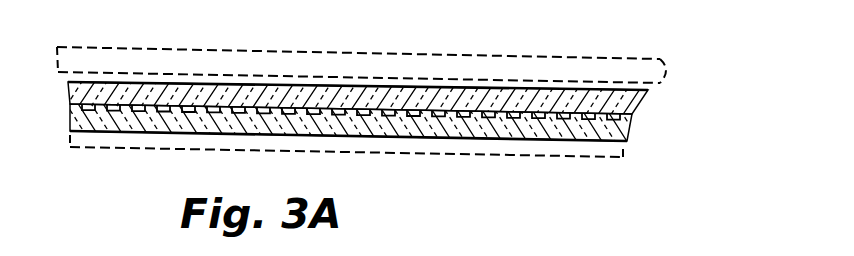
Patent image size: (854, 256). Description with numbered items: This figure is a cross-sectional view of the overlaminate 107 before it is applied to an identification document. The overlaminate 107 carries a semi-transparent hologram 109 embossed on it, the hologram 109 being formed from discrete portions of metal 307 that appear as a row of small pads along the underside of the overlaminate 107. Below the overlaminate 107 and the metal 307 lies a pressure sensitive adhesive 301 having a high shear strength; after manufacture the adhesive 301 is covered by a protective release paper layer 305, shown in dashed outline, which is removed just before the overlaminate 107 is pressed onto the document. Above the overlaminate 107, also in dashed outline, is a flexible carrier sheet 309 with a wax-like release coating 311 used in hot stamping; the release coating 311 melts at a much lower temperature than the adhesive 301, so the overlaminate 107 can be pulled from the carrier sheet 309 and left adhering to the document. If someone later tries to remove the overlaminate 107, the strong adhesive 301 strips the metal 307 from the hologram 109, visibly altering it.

The overlaminate 107 is at (482, 98).
The semi-transparent hologram 109 is at (222, 113).
The pressure sensitive adhesive 301 is at (478, 132).
The protective release paper layer 305 is at (587, 157).
The metal 307 is at (233, 110).
The flexible carrier sheet 309 is at (668, 71).
The release coating 311 is at (653, 95).